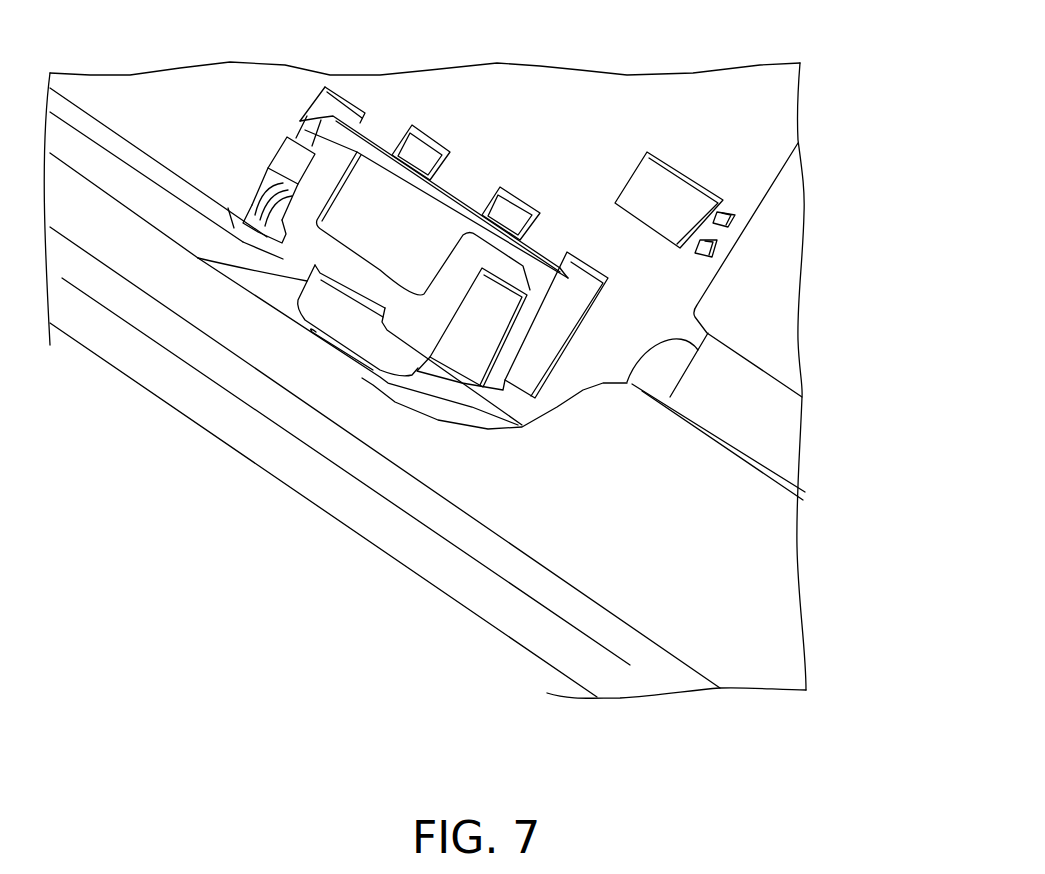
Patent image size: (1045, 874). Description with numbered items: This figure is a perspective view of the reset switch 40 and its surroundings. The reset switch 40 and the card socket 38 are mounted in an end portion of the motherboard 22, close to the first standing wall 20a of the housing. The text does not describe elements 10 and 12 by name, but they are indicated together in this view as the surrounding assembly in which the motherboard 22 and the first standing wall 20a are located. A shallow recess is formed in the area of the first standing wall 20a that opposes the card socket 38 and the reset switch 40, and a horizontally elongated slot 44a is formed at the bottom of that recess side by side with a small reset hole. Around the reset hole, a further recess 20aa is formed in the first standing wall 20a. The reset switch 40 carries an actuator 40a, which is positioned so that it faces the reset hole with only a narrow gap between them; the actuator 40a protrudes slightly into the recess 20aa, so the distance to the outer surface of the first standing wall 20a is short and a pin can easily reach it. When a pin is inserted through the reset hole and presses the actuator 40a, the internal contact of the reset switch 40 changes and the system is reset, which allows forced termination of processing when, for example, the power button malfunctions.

The vehicle 10 is at (806, 123).
The vehicle body 12 is at (771, 270).
The first standing wall 20a is at (213, 420).
The recess 20aa is at (250, 298).
The motherboard 22 is at (717, 158).
The card socket 38 is at (757, 313).
The reset switch 40 is at (363, 200).
The actuator 40a is at (323, 310).
The horizontally elongated slot 44a is at (372, 366).